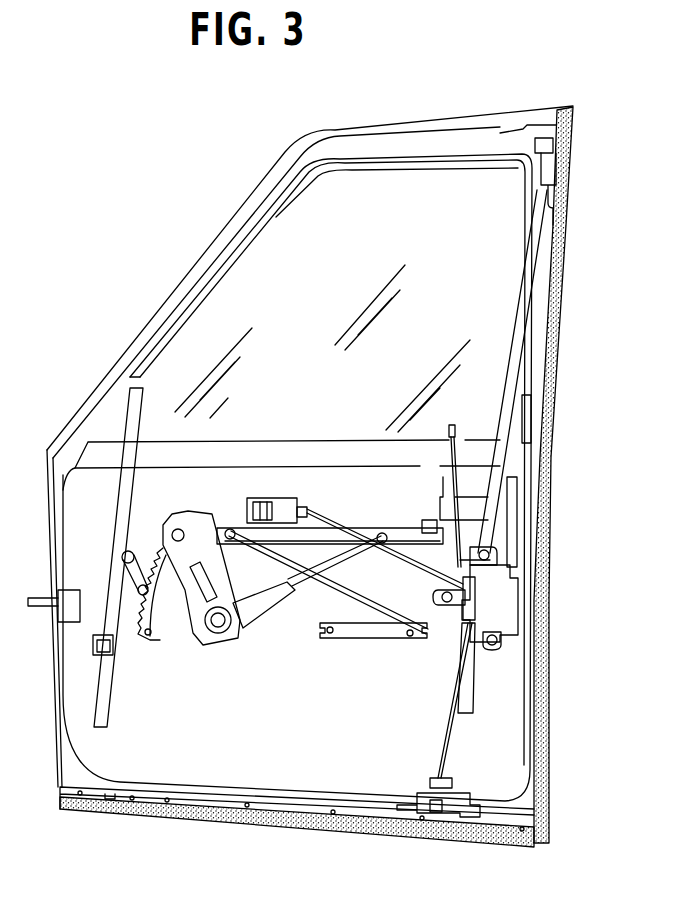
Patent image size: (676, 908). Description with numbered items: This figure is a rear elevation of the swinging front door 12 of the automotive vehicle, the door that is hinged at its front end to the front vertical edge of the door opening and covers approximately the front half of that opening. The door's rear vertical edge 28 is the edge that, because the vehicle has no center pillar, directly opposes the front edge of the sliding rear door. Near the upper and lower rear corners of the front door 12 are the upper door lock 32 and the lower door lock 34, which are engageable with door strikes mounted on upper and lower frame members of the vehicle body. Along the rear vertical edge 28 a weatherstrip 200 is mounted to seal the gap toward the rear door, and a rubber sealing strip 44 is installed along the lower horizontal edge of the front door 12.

The swinging front door 12 is at (172, 268).
The rear vertical edge 28 is at (540, 382).
The upper door lock 32 is at (548, 145).
The lower door lock 34 is at (452, 805).
The rubber sealing strip 44 is at (200, 812).
The weatherstrip 200 is at (555, 335).